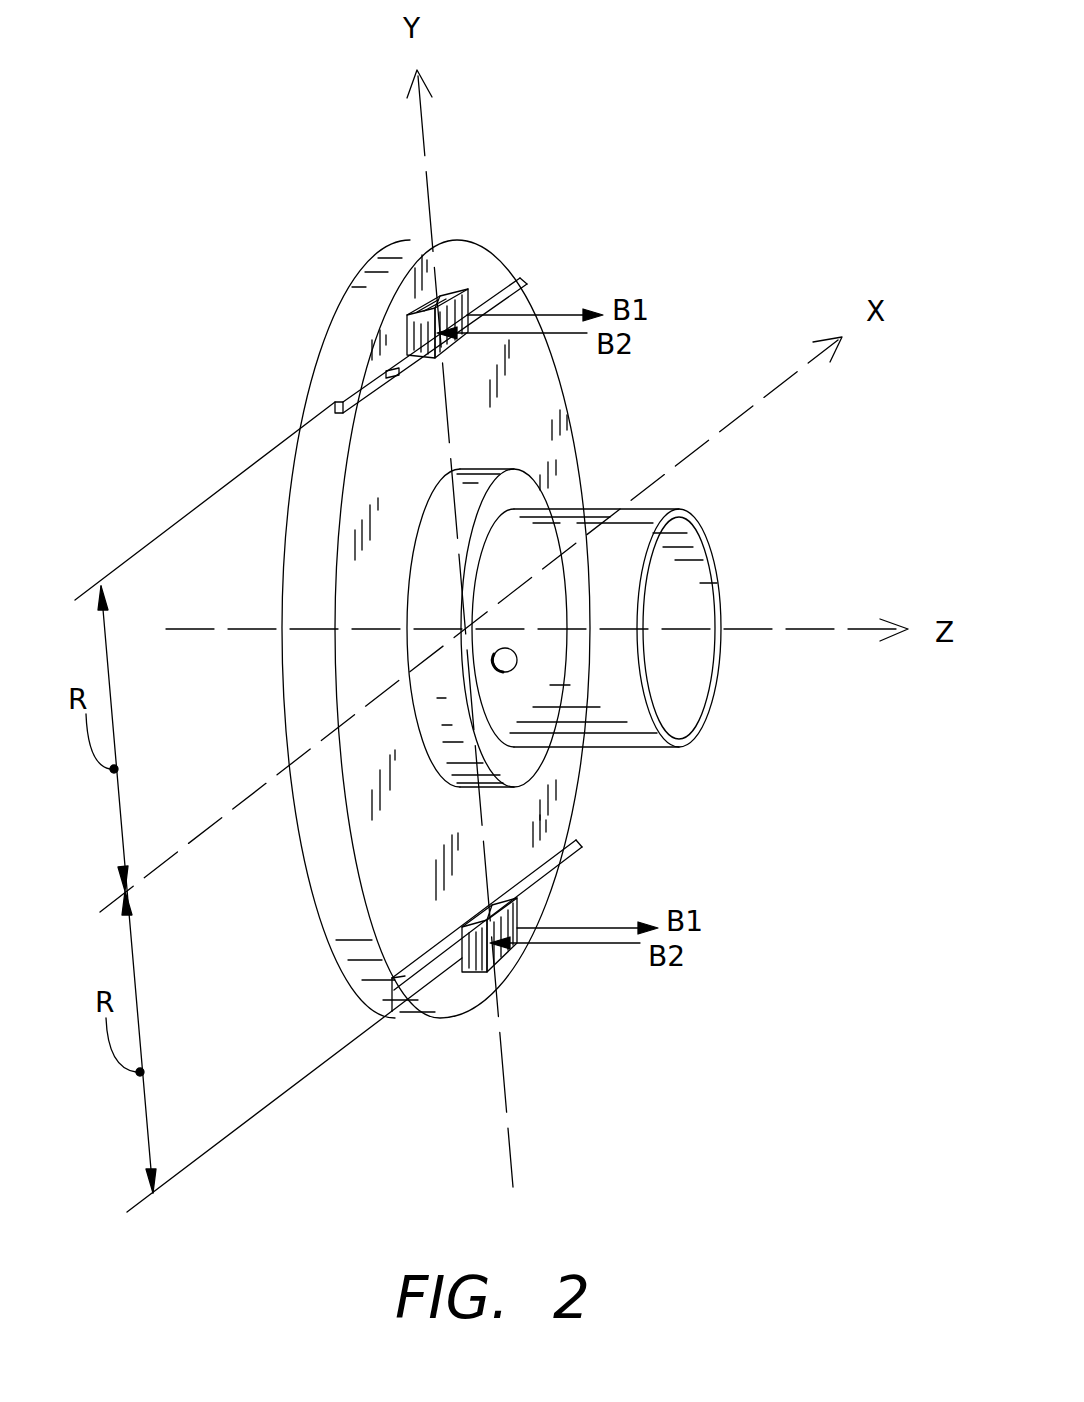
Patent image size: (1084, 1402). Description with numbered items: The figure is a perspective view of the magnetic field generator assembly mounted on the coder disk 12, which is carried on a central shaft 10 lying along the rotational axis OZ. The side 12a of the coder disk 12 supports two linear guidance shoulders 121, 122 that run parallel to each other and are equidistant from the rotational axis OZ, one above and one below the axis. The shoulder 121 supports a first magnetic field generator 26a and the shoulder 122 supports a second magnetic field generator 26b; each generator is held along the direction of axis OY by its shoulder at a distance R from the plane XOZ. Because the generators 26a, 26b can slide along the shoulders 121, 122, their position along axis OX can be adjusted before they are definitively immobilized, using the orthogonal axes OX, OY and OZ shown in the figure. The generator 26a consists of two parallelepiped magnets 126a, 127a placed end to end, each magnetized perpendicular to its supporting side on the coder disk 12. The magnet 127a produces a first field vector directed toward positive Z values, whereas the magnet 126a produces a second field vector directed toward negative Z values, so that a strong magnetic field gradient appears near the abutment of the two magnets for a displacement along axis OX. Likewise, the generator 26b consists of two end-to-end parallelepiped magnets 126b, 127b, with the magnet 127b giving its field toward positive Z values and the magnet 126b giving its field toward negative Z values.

The shaft 10 is at (693, 517).
The coder disk 12 is at (338, 226).
The side of coder disk 12a is at (547, 388).
The magnetic field generator 26a is at (466, 292).
The magnetic field generator 26b is at (507, 952).
The linear guidance shoulder 121 is at (390, 375).
The linear guidance shoulder 122 is at (543, 875).
The parallelepiped magnet 126a is at (417, 328).
The parallelepiped magnet 126b is at (462, 972).
The parallelepiped magnet 127a is at (483, 272).
The parallelepiped magnet 127b is at (512, 918).